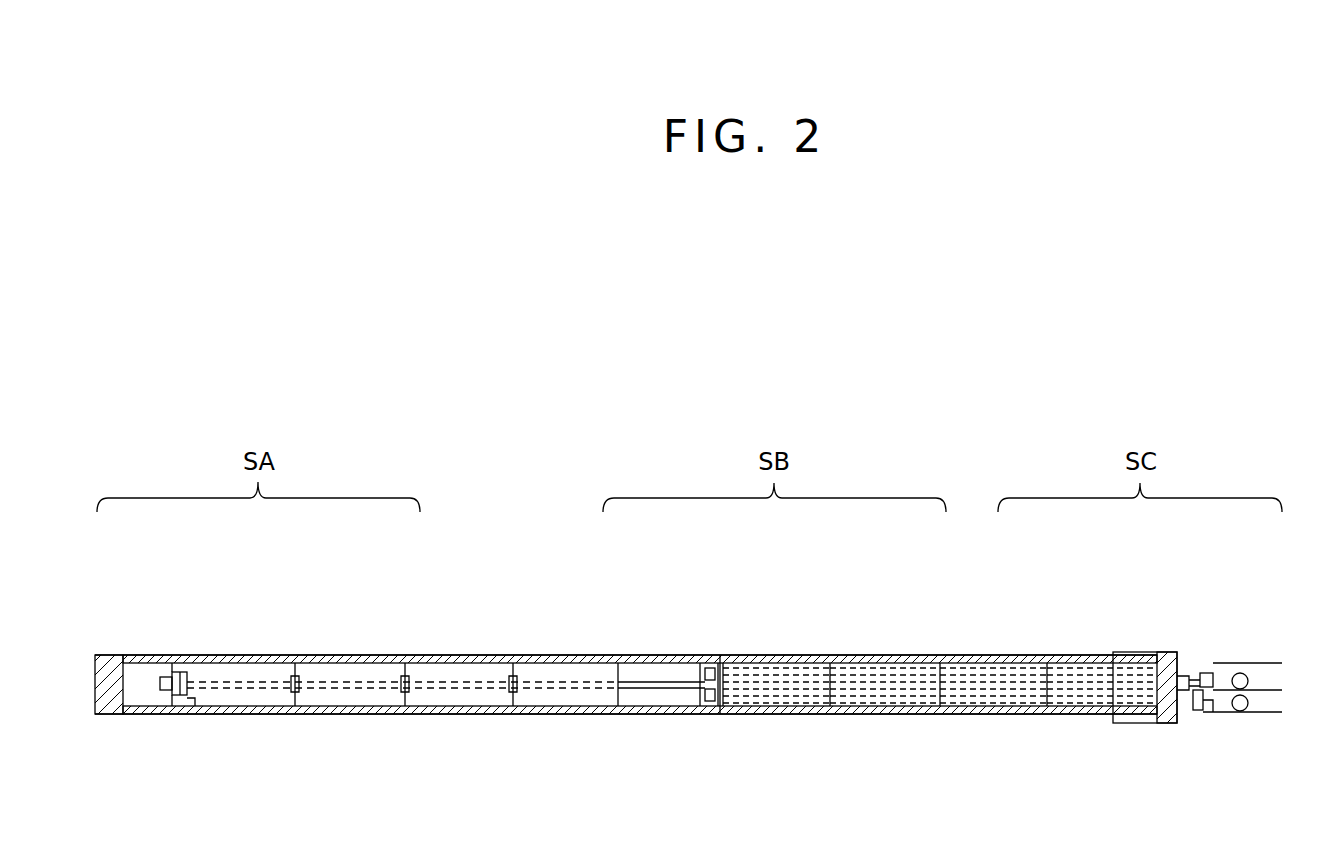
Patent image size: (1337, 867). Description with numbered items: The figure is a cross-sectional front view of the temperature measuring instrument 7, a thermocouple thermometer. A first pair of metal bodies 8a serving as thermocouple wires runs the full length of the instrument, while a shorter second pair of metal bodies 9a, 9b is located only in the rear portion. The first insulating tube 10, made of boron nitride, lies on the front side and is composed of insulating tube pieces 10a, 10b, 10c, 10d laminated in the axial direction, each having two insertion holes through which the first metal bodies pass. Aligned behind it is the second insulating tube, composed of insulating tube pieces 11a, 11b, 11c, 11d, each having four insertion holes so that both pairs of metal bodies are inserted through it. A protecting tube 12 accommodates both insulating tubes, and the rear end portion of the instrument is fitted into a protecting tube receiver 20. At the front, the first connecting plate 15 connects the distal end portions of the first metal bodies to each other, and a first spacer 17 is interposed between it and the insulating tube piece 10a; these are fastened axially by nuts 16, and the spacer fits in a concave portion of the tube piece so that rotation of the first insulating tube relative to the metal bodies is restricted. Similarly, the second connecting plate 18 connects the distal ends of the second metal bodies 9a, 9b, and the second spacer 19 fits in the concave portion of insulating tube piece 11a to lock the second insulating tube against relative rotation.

The temperature measuring instrument 7 is at (1197, 339).
The metal body 8a is at (317, 707).
The metal body 9a is at (874, 658).
The metal body 9b is at (871, 716).
The first insulating tube 10 is at (430, 713).
The insulating tube piece 10a is at (228, 657).
The insulating tube piece 10b is at (343, 657).
The insulating tube piece 10c is at (450, 657).
The insulating tube piece 10d is at (558, 657).
The insulating tube piece 11a is at (768, 660).
The insulating tube piece 11b is at (905, 660).
The insulating tube piece 11c is at (988, 660).
The insulating tube piece 11d is at (1095, 657).
The protecting tube 12 is at (99, 716).
The first connecting plate 15 is at (175, 665).
The nut 16 is at (172, 713).
The first spacer 17 is at (193, 704).
The second connecting plate 18 is at (712, 660).
The second spacer 19 is at (724, 714).
The protecting tube receiver 20 is at (1150, 723).